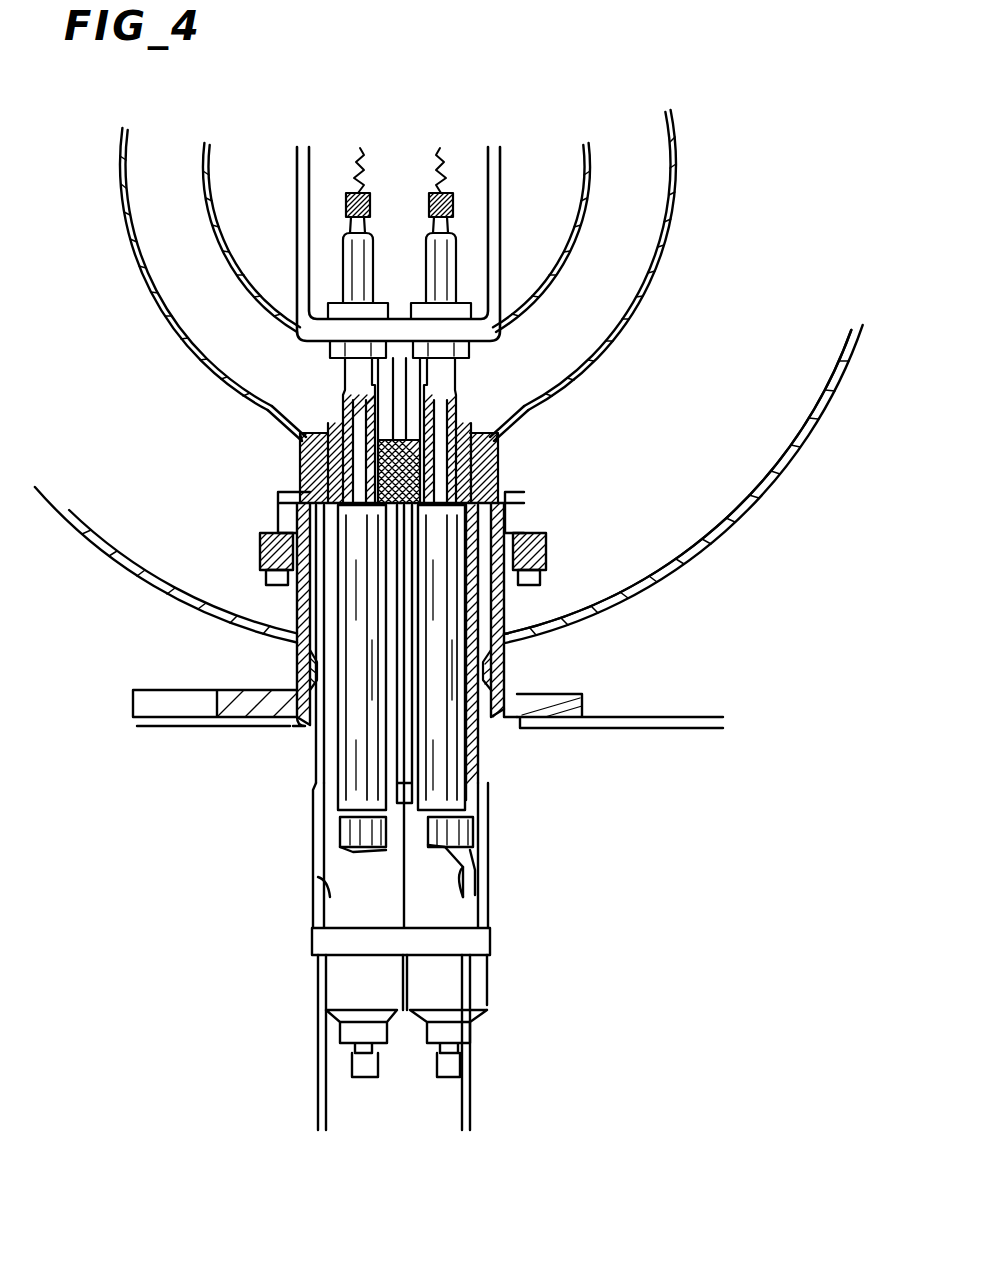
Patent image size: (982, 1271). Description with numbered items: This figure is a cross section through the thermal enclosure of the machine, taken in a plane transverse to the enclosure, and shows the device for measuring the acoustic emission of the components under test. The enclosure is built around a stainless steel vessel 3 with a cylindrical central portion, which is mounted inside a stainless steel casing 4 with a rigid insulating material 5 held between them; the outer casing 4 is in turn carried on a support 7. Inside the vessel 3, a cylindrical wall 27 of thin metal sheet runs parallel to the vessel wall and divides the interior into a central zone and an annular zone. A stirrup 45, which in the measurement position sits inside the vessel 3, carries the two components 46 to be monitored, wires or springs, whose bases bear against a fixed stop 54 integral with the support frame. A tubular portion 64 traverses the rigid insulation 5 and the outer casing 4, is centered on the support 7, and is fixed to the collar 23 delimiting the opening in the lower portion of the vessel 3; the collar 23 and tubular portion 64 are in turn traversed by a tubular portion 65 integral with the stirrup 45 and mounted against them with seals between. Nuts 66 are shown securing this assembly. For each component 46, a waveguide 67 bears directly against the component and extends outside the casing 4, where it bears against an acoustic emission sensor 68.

The vessel 3 is at (648, 287).
The casing 4 is at (790, 459).
The rigid insulating material 5 is at (745, 385).
The support 7 is at (653, 723).
The collar 23 is at (505, 457).
The cylindrical wall 27 is at (578, 247).
The stirrup 45 is at (493, 190).
The components to be monitored 46 is at (440, 152).
The fixed stop 54 is at (345, 208).
The tubular portion 64 is at (510, 599).
The tubular portion 65 is at (488, 756).
The nut 66 is at (300, 462).
The waveguide 67 is at (443, 733).
The acoustic emission sensor 68 is at (325, 858).